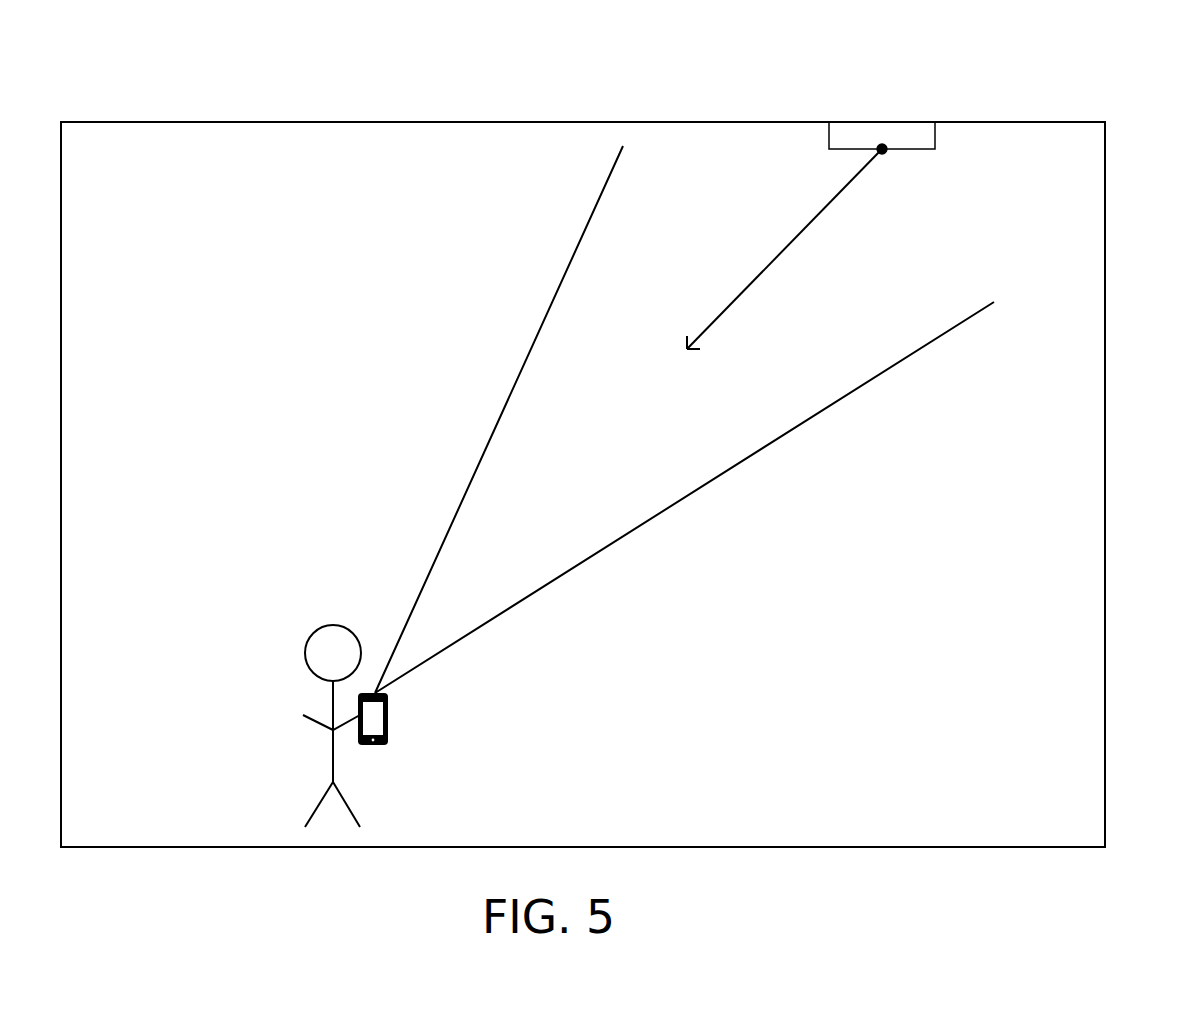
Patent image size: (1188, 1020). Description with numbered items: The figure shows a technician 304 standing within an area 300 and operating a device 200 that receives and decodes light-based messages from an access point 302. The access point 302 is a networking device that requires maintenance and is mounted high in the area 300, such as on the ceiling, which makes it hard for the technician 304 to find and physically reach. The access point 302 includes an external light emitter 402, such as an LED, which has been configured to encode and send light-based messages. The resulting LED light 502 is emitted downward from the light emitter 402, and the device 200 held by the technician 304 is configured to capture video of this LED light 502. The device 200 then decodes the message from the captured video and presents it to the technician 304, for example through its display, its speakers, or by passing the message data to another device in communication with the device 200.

The area 300 is at (1093, 63).
The access point 302 is at (925, 149).
The external light emitter 402 is at (880, 151).
The LED light 502 is at (793, 249).
The technician 304 is at (304, 648).
The device 200 is at (385, 745).